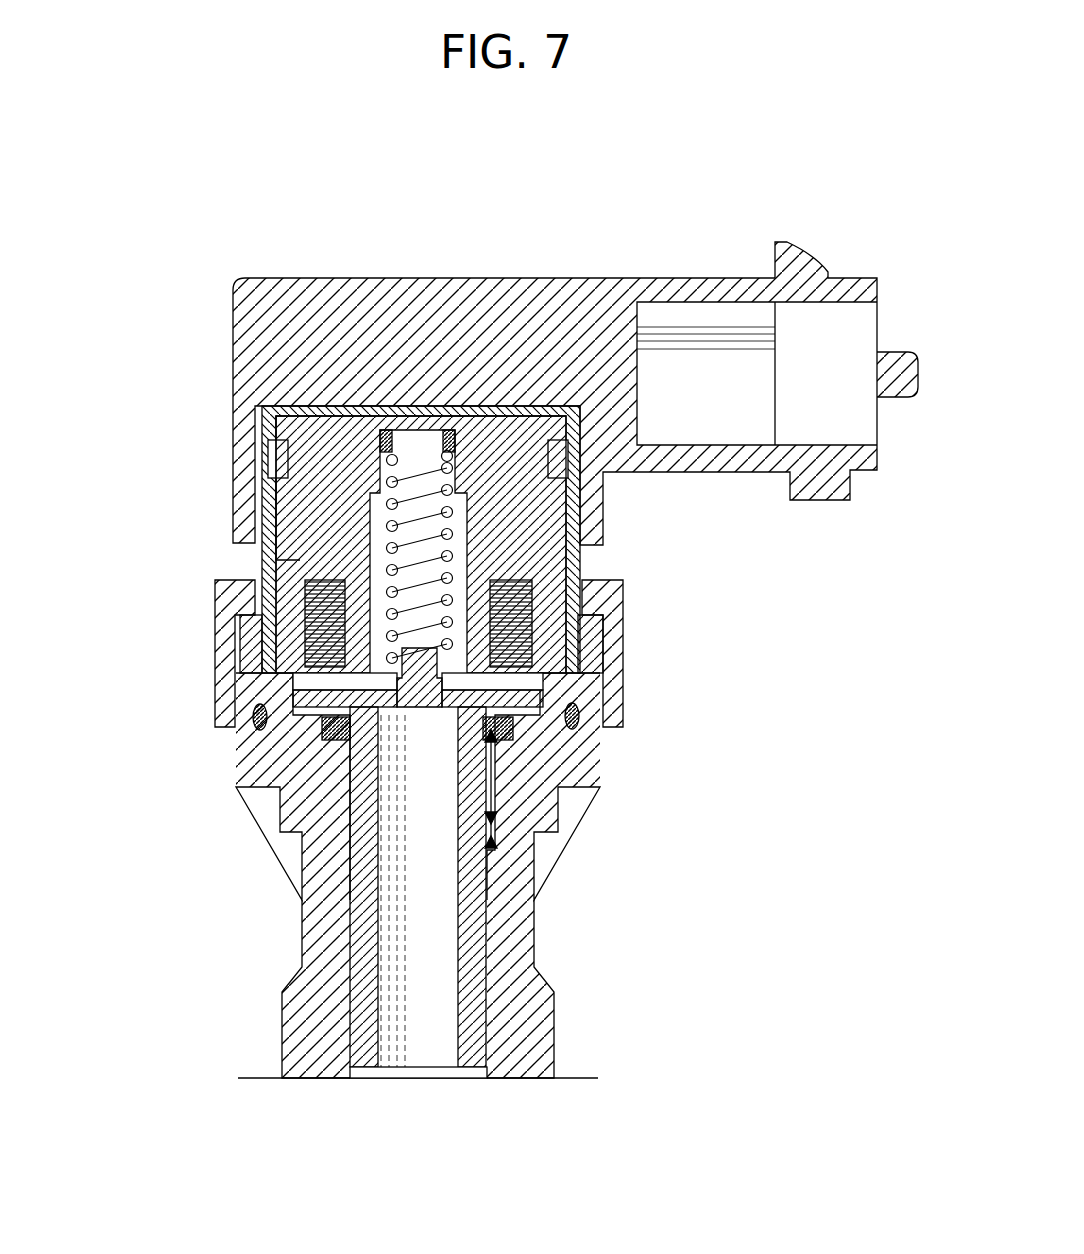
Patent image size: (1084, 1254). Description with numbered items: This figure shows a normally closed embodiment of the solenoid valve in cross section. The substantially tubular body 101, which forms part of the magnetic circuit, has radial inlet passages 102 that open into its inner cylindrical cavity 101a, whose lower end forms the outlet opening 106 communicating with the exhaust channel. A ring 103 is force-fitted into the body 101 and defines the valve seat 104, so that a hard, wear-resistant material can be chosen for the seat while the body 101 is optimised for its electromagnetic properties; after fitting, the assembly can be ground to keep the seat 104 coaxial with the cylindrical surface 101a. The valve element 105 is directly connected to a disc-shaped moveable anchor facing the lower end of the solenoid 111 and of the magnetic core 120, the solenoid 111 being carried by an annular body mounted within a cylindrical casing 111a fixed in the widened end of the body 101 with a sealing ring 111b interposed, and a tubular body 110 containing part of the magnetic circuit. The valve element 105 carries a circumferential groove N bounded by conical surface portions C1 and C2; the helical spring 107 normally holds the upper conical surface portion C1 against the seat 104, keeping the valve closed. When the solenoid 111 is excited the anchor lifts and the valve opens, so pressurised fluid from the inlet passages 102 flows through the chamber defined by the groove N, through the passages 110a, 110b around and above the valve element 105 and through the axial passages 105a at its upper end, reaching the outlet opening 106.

The helical spring 107 is at (257, 558).
The magnetic core 120 is at (603, 522).
The solenoid 111 is at (573, 580).
The cylindrical casing 111a is at (262, 565).
The sealing ring 111b is at (600, 737).
The axial passages 105a is at (330, 610).
The tubular body 110 is at (623, 675).
The passage 110a is at (235, 677).
The passage 110b is at (585, 615).
The valve seat 104 is at (383, 690).
The ring 103 is at (330, 748).
The radial passages 102 is at (322, 860).
The valve element 105 is at (365, 940).
The tubular body 101 is at (287, 1033).
The inner cavity 101a is at (485, 1025).
The outlet opening 106 is at (413, 1073).
The conical surface portion C1 is at (500, 780).
The conical surface portion C2 is at (495, 843).
The circumferential groove N is at (493, 826).